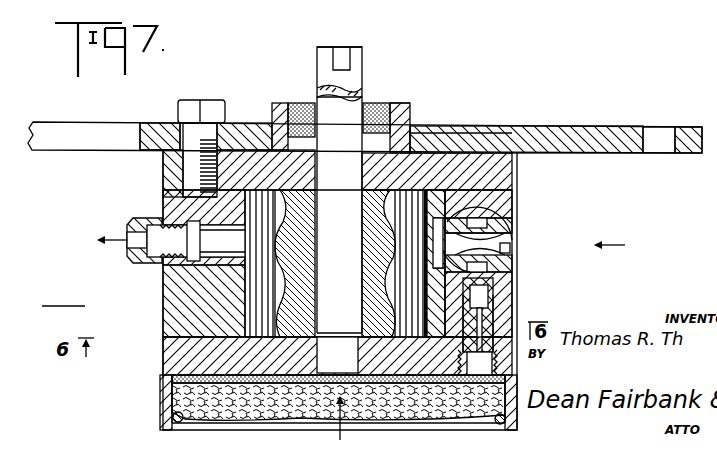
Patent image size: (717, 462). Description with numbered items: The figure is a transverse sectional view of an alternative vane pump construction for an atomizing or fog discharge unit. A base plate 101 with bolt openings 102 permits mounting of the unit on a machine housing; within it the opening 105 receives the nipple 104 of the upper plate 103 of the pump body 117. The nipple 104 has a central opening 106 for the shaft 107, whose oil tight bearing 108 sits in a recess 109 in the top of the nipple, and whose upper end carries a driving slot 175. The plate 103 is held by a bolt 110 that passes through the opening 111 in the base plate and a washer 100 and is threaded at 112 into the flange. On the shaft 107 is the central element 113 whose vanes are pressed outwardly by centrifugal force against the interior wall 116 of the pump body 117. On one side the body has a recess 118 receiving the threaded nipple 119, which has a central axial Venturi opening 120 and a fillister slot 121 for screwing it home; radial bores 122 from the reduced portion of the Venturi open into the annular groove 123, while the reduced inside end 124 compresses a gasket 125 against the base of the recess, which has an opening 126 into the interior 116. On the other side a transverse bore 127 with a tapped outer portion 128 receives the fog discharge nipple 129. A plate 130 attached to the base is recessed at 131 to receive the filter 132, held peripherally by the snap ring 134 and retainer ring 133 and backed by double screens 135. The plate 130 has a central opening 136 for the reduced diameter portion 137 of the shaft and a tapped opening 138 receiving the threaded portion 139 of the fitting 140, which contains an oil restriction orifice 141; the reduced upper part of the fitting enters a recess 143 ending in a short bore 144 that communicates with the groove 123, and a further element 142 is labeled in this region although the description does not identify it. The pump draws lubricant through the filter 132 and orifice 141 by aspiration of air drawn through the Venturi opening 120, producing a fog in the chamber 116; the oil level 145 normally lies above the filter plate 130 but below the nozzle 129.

The washer 100 is at (232, 93).
The base plate 101 is at (565, 128).
The bolt openings 102 is at (660, 132).
The upper plate 103 is at (517, 172).
The nipple 104 is at (410, 109).
The opening 105 is at (412, 133).
The central opening 106 is at (310, 145).
The shaft 107 is at (367, 66).
The oil tight bearing 108 is at (377, 103).
The recess 109 is at (400, 105).
The bolt 110 is at (200, 100).
The opening 111 is at (166, 131).
The threaded portion 112 is at (165, 172).
The central element 113 is at (247, 312).
The interior wall 116 is at (165, 344).
The pump body 117 is at (297, 290).
The recess 118 is at (482, 203).
The threaded nipple 119 is at (500, 225).
The Venturi opening 120 is at (470, 262).
The fillister slot 121 is at (510, 245).
The radial bores 122 is at (437, 230).
The annular groove 123 is at (480, 246).
The inside end 124 is at (462, 200).
The gasket 125 is at (435, 196).
The opening 126 is at (455, 238).
The transverse bore 127 is at (217, 250).
The tapped outer portion 128 is at (183, 215).
The fog discharge nipple 129 is at (140, 223).
The plate 130 is at (172, 356).
The recess 131 is at (505, 408).
The filter 132 is at (222, 388).
The retainer ring 133 is at (178, 424).
The snap ring 134 is at (172, 415).
The double screens 135 is at (338, 401).
The central opening 136 is at (314, 356).
The reduced diameter portion 137 is at (340, 354).
The tapped opening 138 is at (467, 358).
The threaded portion 139 is at (488, 316).
The fitting 140 is at (460, 312).
The oil restriction orifice 141 is at (440, 300).
The piston wall 142 is at (415, 292).
The recess 143 is at (497, 289).
The short bore 144 is at (445, 270).
The oil level 145 is at (63, 295).
The driving slot 175 is at (353, 58).